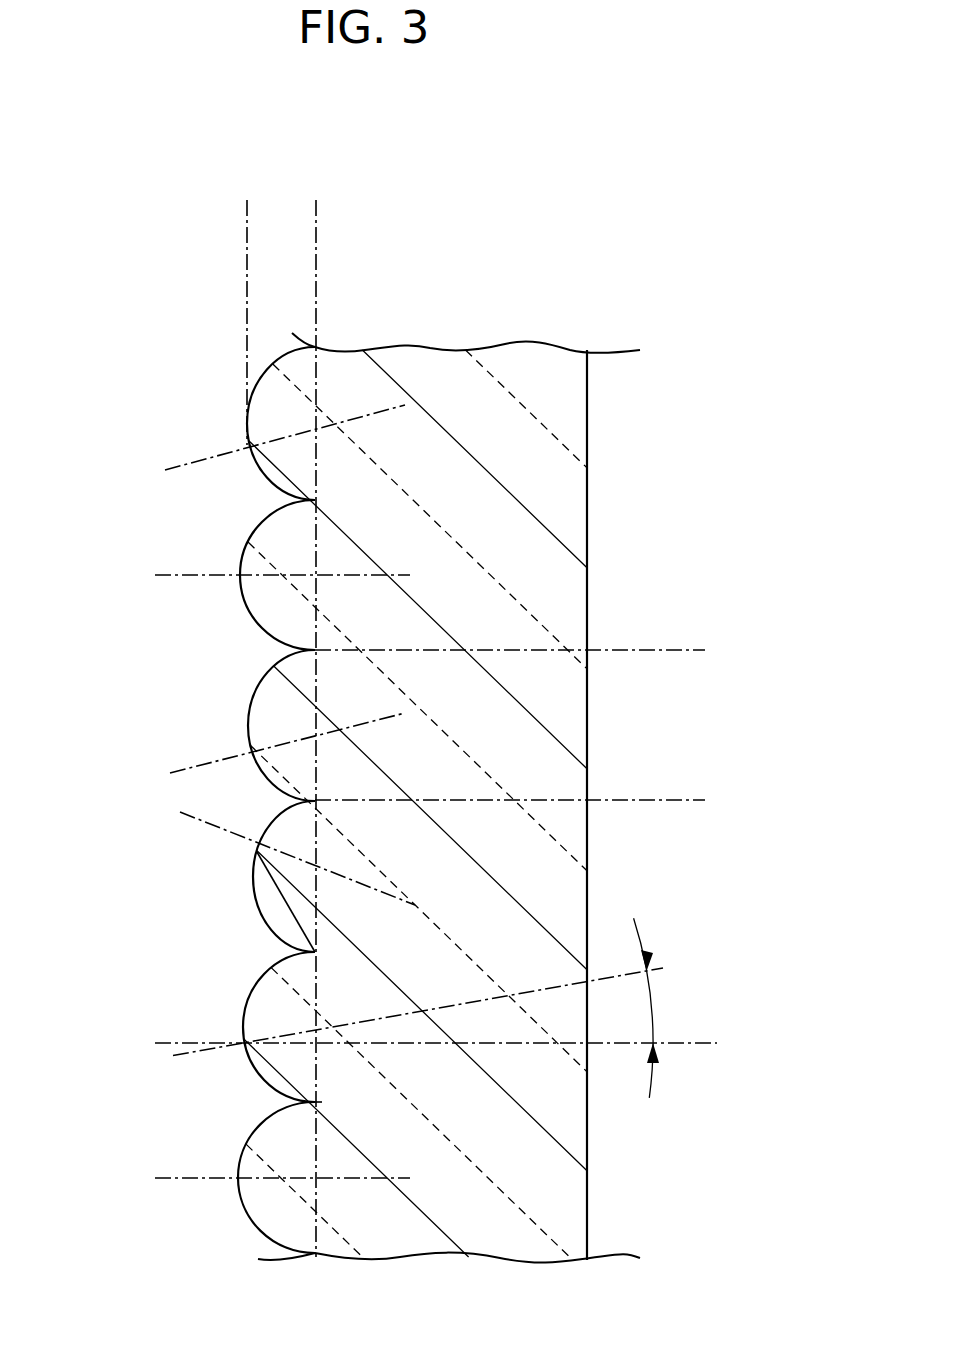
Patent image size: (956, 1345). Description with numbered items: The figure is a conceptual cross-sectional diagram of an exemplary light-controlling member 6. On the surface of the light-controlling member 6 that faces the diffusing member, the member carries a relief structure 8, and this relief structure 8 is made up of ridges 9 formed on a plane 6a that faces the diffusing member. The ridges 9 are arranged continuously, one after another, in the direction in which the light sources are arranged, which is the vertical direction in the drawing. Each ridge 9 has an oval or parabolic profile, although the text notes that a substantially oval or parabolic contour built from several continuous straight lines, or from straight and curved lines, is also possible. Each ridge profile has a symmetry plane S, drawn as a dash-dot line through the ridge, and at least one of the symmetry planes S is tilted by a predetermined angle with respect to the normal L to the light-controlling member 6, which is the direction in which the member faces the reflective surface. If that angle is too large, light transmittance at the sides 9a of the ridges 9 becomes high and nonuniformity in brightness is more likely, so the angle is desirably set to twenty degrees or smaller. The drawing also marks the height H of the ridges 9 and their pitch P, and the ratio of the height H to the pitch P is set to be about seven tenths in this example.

The light-controlling member 6 is at (634, 186).
The plane 6a is at (313, 1100).
The relief structure 8 is at (260, 1227).
The ridges 9 is at (260, 473).
The sides 9a is at (292, 948).
The symmetry planes S is at (218, 455).
The height H is at (375, 241).
The pitch P is at (680, 650).
The normal L is at (449, 1047).